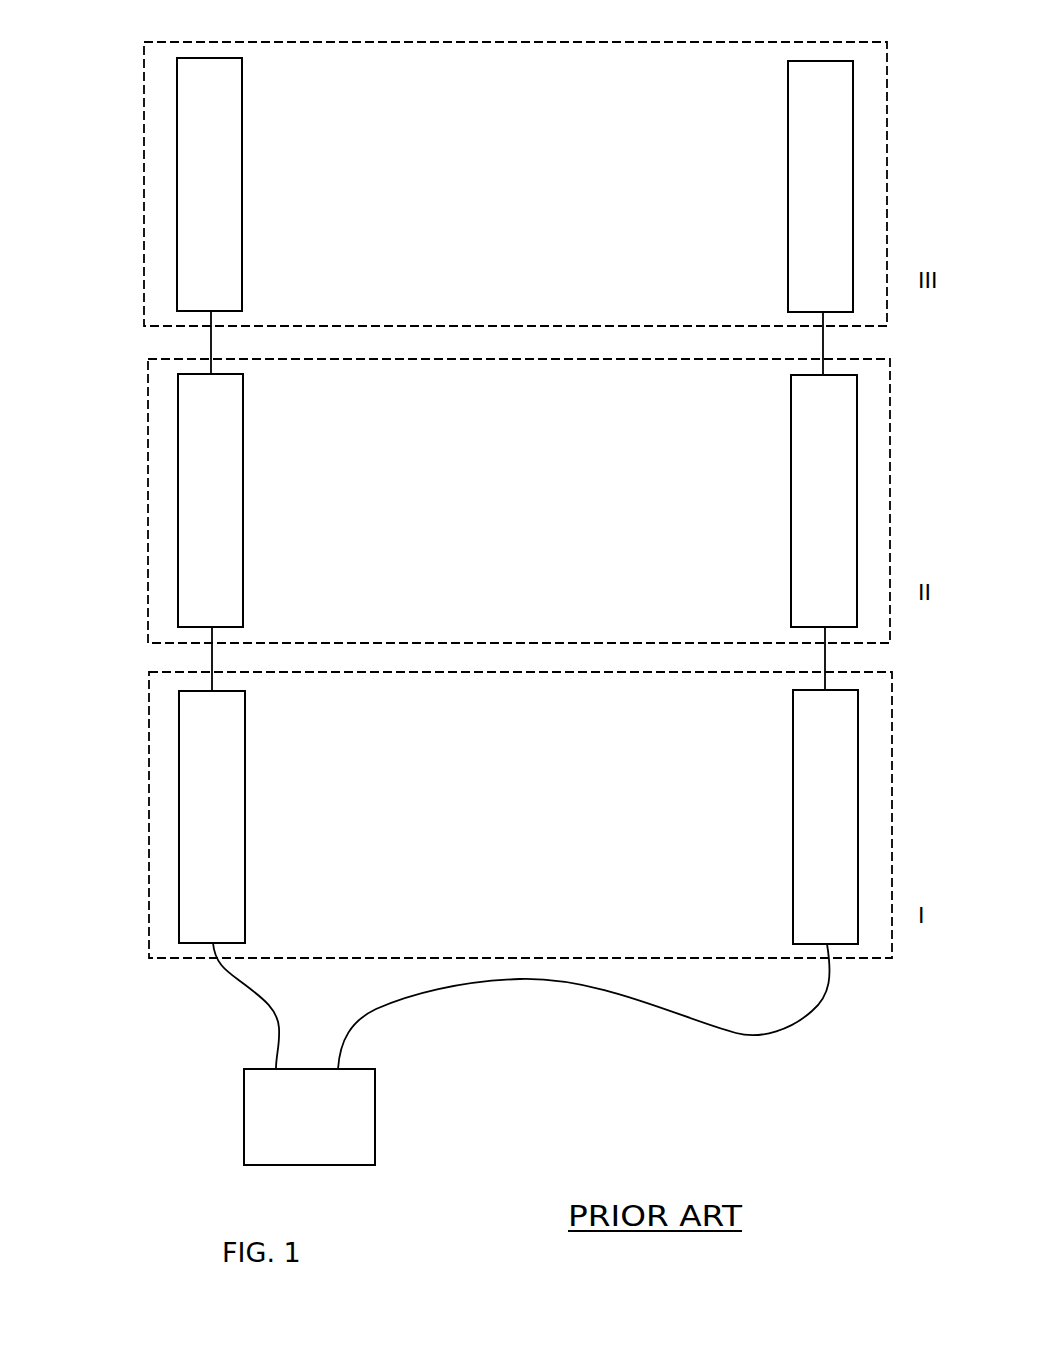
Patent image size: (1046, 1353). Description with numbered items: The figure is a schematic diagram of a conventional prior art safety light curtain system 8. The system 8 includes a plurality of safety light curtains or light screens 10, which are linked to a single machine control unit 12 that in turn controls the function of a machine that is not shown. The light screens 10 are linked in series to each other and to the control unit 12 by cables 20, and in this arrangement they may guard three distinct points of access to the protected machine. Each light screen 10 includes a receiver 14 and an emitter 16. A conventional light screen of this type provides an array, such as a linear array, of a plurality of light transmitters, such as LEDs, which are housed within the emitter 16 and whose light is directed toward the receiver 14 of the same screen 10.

The prior art system 8 is at (112, 234).
The safety light curtain 10 is at (454, 107).
The machine control unit 12 is at (322, 1129).
The receiver 14 is at (216, 137).
The emitter 16 is at (829, 141).
The cable 20 is at (211, 342).